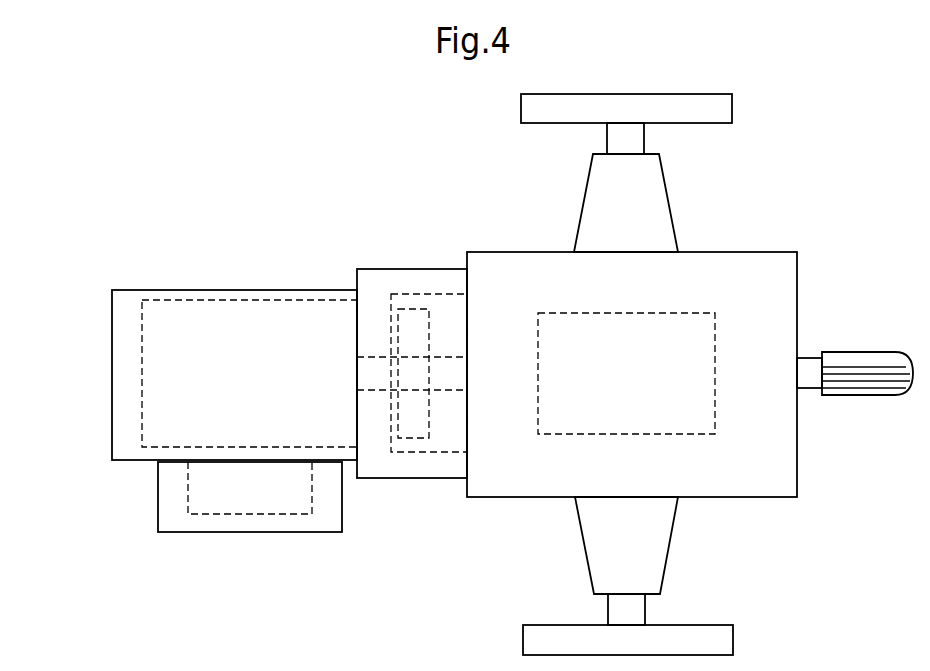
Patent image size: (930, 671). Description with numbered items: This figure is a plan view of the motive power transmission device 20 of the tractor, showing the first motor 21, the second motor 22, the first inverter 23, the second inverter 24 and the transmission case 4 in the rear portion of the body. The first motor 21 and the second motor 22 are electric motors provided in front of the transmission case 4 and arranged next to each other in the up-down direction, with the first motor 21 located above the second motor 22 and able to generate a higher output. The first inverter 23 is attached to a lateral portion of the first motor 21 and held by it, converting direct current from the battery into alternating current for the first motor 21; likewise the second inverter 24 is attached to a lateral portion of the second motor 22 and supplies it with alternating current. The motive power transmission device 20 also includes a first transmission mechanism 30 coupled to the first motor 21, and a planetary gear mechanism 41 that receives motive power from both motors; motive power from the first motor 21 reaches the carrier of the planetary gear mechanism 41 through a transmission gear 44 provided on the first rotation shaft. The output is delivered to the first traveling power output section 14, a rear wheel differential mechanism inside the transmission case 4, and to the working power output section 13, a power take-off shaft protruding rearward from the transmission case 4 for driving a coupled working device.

The motive power transmission device 20 is at (222, 222).
The first motor 21 is at (112, 337).
The second motor 22 is at (142, 408).
The first inverter 23 is at (158, 490).
The second inverter 24 is at (263, 514).
The planetary gear mechanism 41 is at (428, 455).
The first transmission mechanism 30 is at (442, 404).
The transmission gear 44 is at (412, 296).
The transmission case 4 is at (527, 262).
The first traveling power output section 14 is at (668, 310).
The working power output section 13 is at (857, 357).